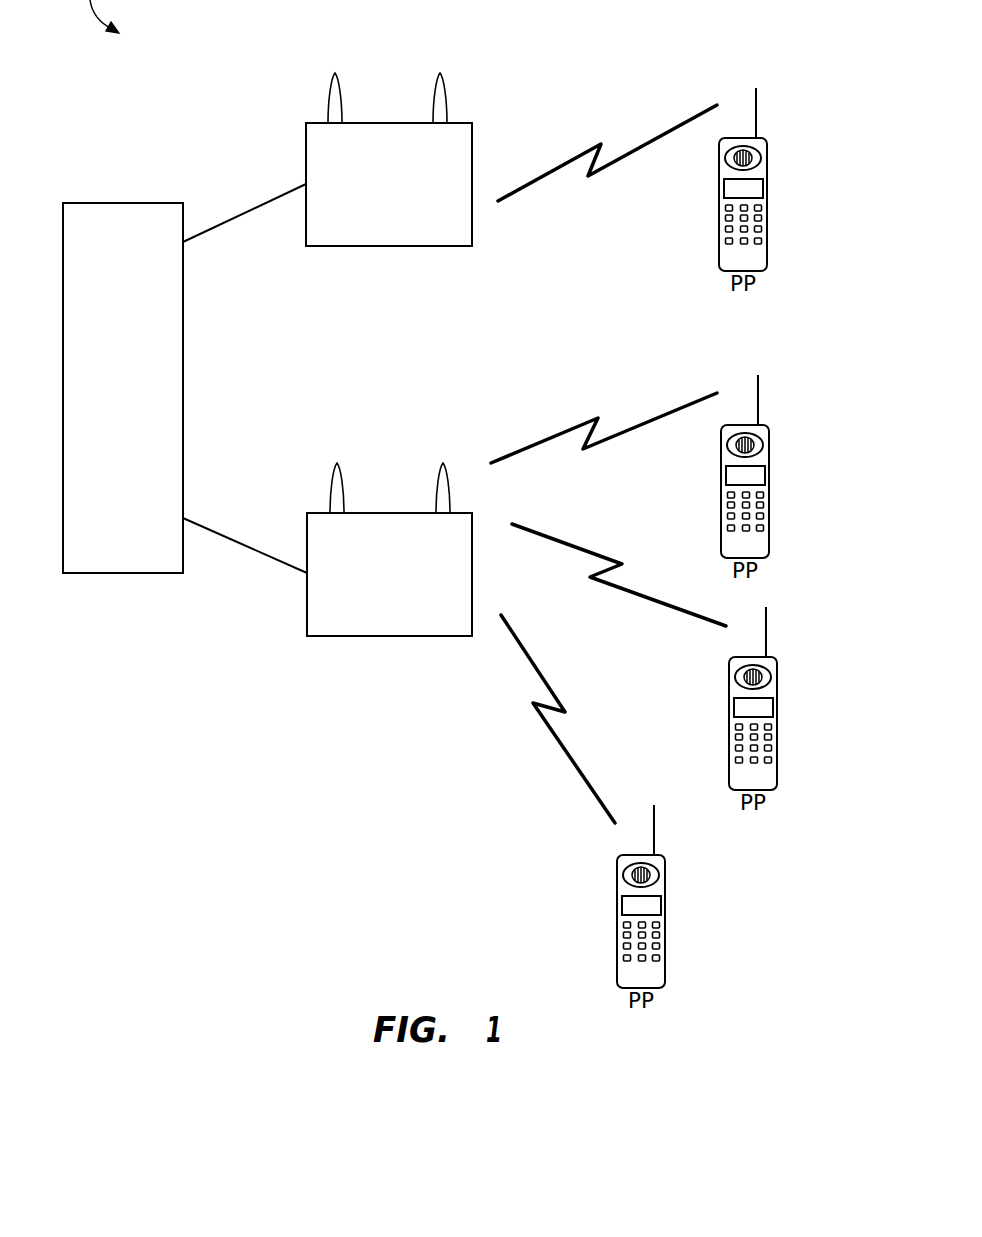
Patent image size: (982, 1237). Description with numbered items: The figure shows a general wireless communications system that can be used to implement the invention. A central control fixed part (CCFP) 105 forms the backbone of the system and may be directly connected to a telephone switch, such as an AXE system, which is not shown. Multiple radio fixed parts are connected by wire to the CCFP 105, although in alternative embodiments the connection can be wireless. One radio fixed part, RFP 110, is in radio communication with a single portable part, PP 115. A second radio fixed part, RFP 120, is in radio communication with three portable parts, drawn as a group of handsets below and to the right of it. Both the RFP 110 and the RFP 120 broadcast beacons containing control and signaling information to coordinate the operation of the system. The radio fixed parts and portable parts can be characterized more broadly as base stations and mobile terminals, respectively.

The central control fixed part (CCFP) 105 is at (130, 203).
The radio fixed part (RFP) 110 is at (330, 247).
The radio fixed part (RFP) 120 is at (337, 637).
The portable part (PP) 115 is at (769, 168).